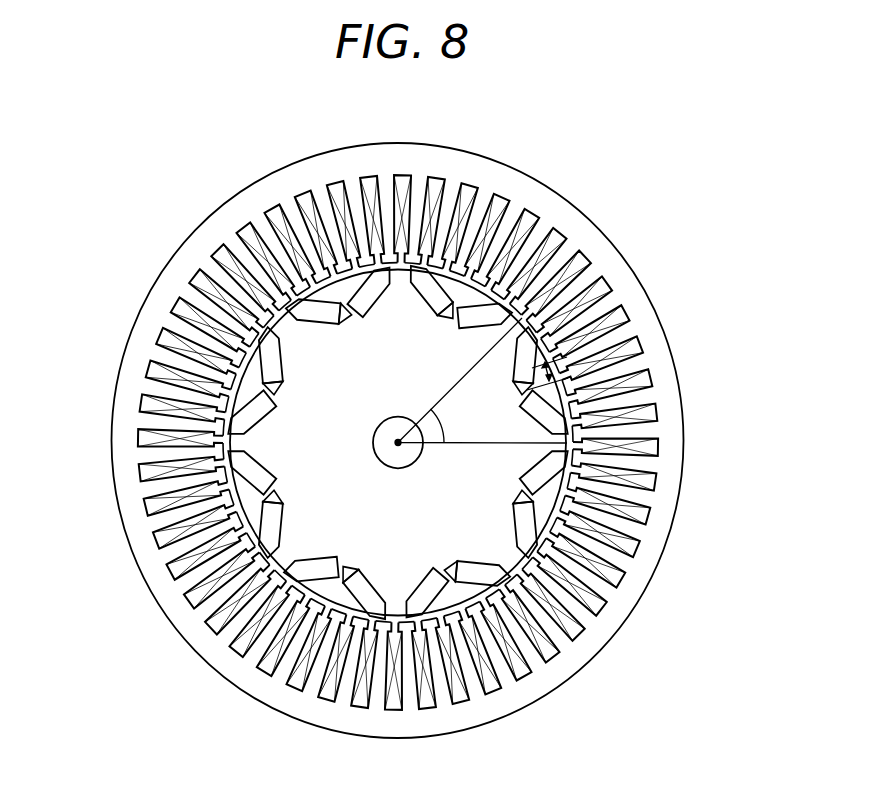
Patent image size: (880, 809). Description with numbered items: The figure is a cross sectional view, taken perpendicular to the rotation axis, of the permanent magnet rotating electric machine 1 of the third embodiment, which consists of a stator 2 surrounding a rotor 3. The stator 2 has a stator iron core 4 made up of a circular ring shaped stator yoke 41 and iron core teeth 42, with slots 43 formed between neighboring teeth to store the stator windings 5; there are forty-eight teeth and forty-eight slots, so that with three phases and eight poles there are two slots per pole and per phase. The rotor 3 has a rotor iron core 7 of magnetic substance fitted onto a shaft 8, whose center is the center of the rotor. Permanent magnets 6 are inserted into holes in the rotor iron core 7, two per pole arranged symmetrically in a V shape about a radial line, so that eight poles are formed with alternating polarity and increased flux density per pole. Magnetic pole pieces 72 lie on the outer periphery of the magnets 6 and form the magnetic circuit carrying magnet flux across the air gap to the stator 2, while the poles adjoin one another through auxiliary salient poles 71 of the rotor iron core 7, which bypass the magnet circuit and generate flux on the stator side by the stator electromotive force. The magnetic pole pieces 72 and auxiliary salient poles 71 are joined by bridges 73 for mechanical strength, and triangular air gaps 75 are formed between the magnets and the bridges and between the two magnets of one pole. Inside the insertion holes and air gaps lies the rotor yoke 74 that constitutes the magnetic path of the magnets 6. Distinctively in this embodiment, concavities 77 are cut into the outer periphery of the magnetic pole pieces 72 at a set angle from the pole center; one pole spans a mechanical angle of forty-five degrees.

The permanent magnet rotating electric machine 1 is at (739, 147).
The stator 2 is at (671, 336).
The rotor 3 is at (260, 437).
The stator iron core 4 is at (667, 467).
The stator windings 5 is at (645, 553).
The permanent magnets 6 is at (283, 523).
The rotor iron core 7 is at (292, 543).
The shaft 8 is at (385, 437).
The stator yoke 41 is at (610, 262).
The iron core teeth 42 is at (485, 197).
The slots 43 is at (334, 180).
The auxiliary salient poles 71 is at (503, 555).
The magnetic pole pieces 72 is at (462, 318).
The bridges 73 is at (316, 315).
The rotor yoke 74 is at (457, 540).
The triangular air gaps 75 is at (360, 327).
The concavities 77 is at (440, 278).